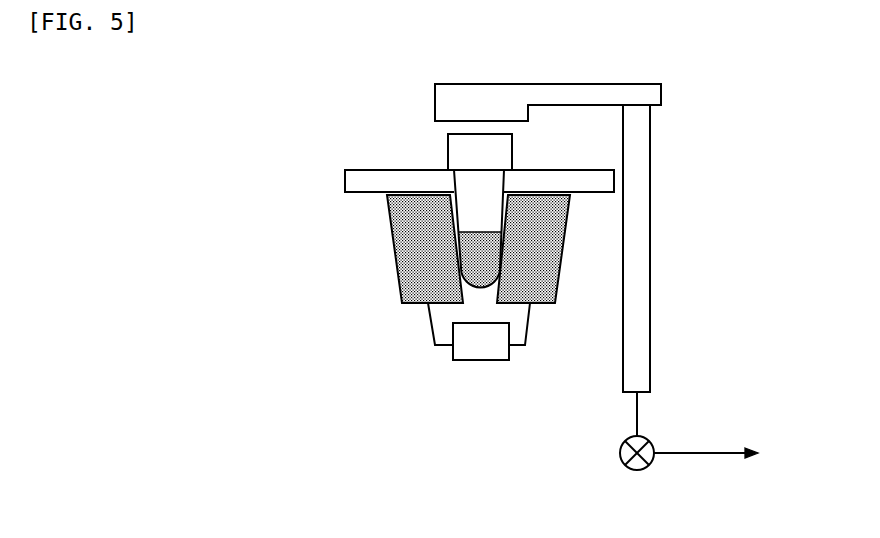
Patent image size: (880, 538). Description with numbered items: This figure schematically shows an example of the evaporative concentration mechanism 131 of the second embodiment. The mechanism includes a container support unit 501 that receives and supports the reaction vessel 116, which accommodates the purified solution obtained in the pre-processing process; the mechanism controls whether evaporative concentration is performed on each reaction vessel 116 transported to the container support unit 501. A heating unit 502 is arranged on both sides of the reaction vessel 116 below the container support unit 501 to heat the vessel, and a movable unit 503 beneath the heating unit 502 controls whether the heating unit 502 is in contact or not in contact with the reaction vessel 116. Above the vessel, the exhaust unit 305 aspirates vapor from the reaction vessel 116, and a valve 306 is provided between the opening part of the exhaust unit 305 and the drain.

The evaporative concentration mechanism 131 is at (198, 56).
The exhaust unit 305 is at (476, 90).
The valve 306 is at (643, 470).
The reaction vessel 116 is at (457, 158).
The container support unit 501 is at (346, 178).
The heating unit 502 is at (402, 262).
The movable unit 503 is at (452, 362).